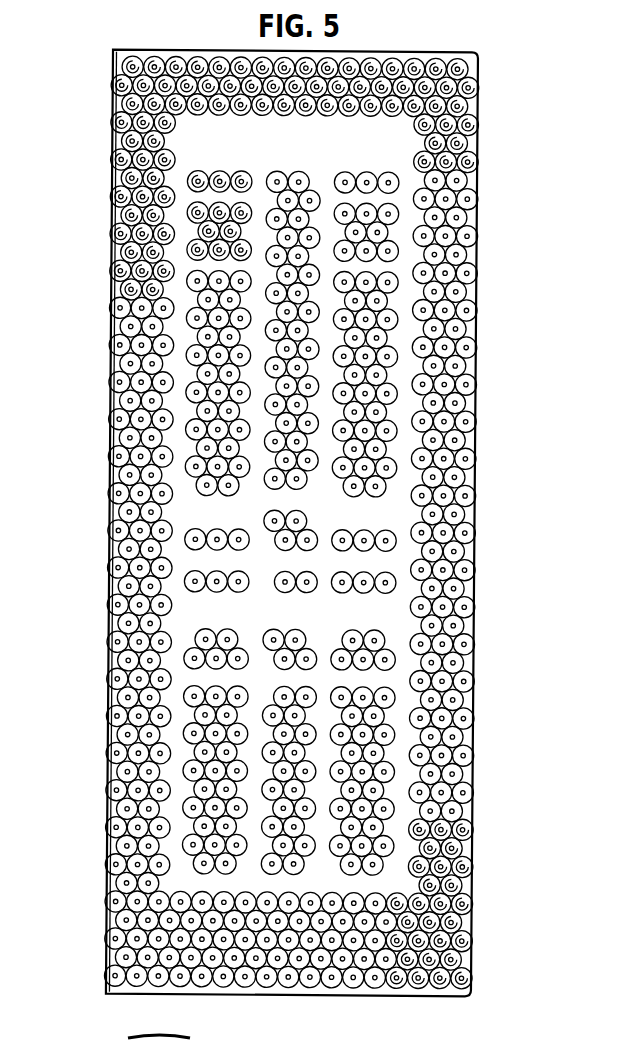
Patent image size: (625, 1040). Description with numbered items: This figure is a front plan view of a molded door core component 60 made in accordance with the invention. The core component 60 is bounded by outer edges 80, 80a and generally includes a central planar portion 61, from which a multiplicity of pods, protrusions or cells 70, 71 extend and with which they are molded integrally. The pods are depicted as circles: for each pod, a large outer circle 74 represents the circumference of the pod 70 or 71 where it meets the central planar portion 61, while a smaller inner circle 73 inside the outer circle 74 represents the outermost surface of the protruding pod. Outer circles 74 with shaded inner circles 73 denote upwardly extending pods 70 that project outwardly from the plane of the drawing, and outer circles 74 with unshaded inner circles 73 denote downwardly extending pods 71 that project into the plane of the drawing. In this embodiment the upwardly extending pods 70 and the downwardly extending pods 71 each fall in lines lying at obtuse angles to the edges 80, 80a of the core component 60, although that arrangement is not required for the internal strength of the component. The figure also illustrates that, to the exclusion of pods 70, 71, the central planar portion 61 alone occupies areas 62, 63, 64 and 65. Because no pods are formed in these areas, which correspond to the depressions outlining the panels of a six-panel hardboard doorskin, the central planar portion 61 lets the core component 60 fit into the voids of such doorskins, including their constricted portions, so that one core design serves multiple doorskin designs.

The molded core component 60 is at (301, 530).
The central planar portion 61 is at (470, 67).
The area 62 is at (214, 136).
The area 63 is at (209, 608).
The area 64 is at (406, 817).
The area 65 is at (409, 297).
The upwardly extending pod 70 is at (479, 962).
The downwardly extending pod 71 is at (479, 879).
The inner circle 73 is at (457, 591).
The outer circle 74 is at (469, 628).
The outer edge 80 is at (115, 381).
The outer edge 80a is at (479, 472).